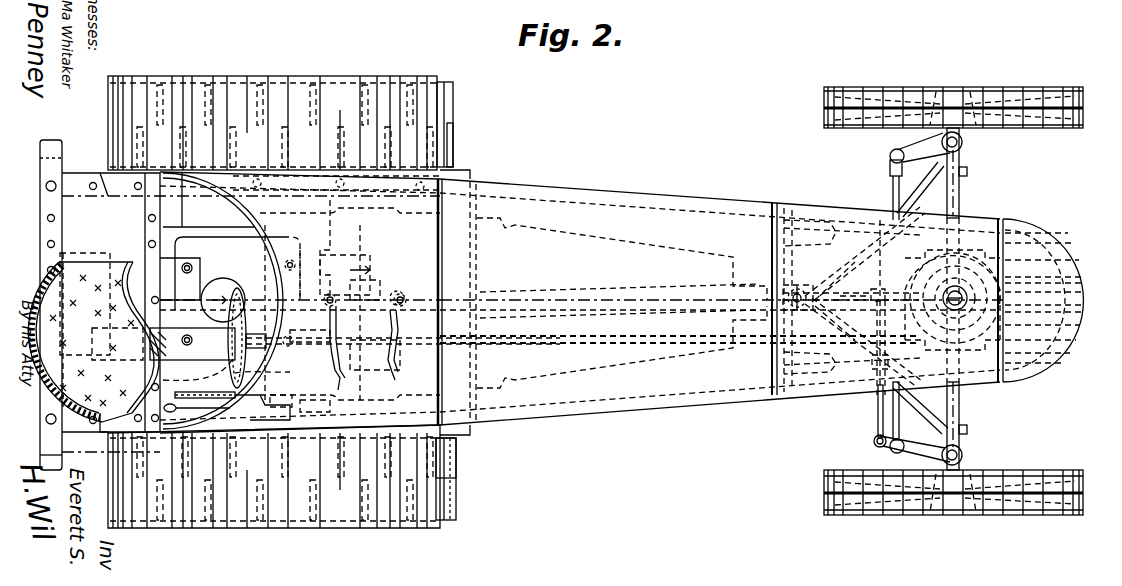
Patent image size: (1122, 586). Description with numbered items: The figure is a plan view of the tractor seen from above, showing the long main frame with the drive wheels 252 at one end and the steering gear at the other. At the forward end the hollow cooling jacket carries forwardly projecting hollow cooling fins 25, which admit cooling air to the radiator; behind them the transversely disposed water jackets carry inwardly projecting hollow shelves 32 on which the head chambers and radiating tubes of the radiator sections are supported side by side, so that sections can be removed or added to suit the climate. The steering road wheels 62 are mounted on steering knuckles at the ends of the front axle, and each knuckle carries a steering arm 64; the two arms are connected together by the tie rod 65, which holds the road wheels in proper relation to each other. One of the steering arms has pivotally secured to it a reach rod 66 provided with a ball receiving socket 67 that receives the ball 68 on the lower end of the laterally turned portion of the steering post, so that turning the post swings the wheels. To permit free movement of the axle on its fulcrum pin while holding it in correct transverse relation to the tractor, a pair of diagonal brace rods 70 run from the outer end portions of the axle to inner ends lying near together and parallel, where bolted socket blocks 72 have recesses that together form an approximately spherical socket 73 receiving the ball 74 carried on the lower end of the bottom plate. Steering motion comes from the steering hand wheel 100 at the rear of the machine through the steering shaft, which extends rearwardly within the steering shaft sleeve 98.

The hollow cooling fins 25 is at (1078, 290).
The hollow shelves 32 is at (800, 242).
The steering road wheels 62 is at (1018, 88).
The steering arm 64 is at (905, 143).
The tie rod 65 is at (893, 412).
The reach rod 66 is at (878, 400).
The ball receiving socket 67 is at (874, 305).
The ball 68 is at (876, 289).
The diagonal brace rods 70 is at (937, 185).
The socket blocks 72 is at (799, 294).
The spherical socket 73 is at (788, 296).
The ball 74 is at (800, 306).
The steering shaft sleeve 98 is at (268, 338).
The steering hand wheel 100 is at (235, 310).
The drive wheels 252 is at (458, 470).